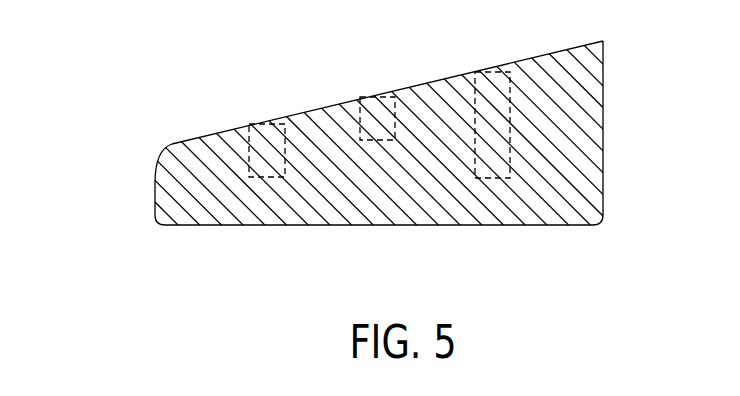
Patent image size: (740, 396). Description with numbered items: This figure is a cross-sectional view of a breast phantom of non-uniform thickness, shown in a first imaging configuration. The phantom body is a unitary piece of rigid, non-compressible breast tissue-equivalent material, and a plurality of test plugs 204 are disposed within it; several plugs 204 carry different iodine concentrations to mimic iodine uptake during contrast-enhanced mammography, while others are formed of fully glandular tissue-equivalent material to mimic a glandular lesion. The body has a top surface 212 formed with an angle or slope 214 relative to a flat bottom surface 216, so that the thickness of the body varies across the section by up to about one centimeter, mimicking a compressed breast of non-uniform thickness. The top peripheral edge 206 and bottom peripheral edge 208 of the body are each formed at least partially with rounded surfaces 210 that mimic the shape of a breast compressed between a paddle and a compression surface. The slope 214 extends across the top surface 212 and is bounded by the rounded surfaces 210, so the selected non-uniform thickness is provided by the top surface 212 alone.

The test plugs 204 is at (268, 147).
The top peripheral edge 206 is at (158, 147).
The bottom peripheral edge 208 is at (158, 227).
The rounded surfaces 210 is at (169, 144).
The top surface 212 is at (427, 82).
The slope 214 is at (330, 107).
The flat bottom surface 216 is at (352, 226).